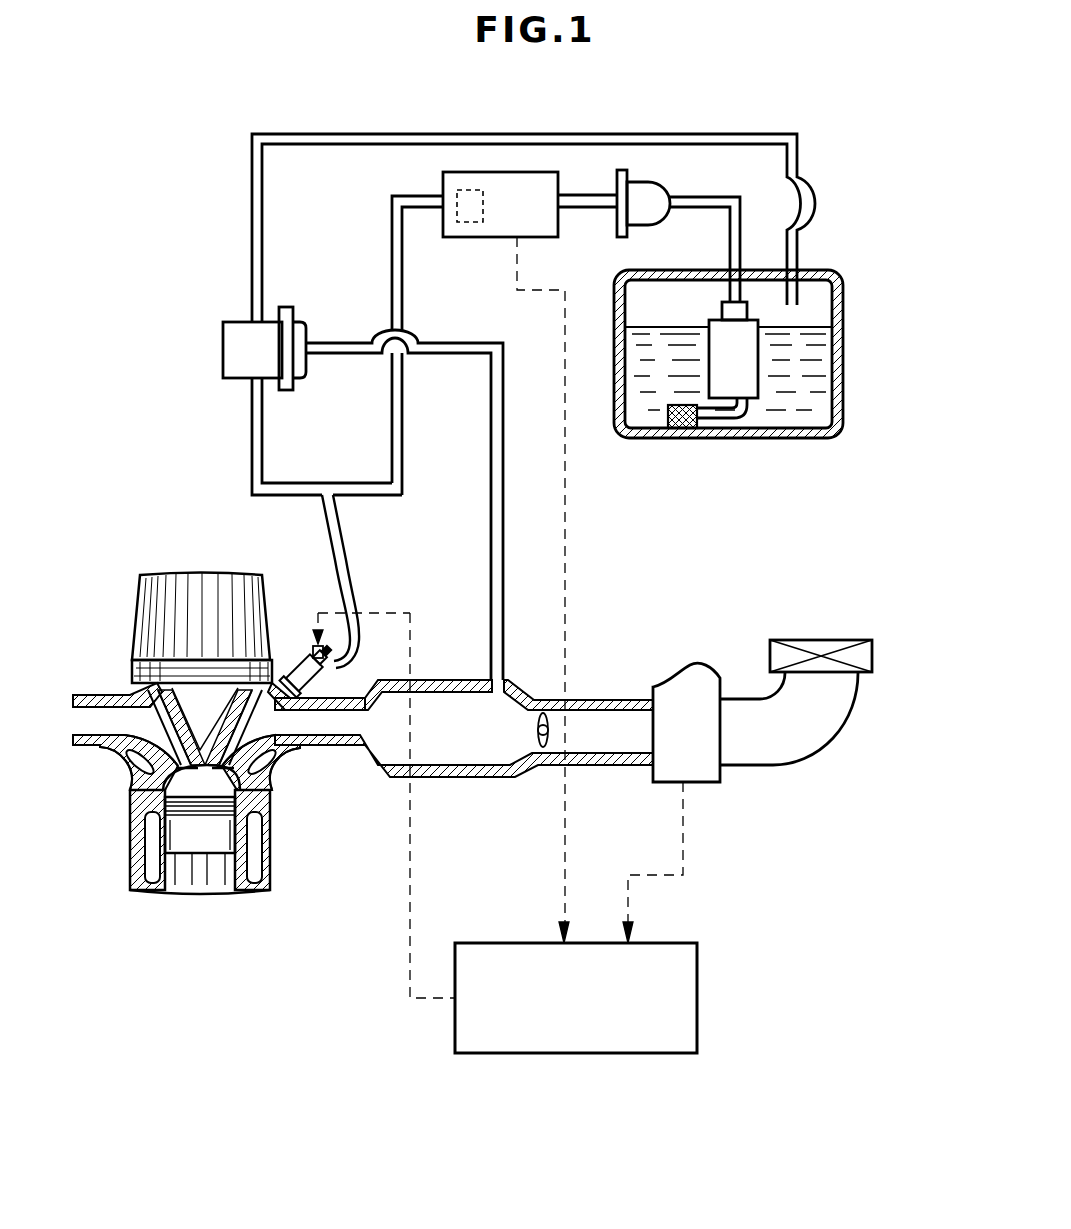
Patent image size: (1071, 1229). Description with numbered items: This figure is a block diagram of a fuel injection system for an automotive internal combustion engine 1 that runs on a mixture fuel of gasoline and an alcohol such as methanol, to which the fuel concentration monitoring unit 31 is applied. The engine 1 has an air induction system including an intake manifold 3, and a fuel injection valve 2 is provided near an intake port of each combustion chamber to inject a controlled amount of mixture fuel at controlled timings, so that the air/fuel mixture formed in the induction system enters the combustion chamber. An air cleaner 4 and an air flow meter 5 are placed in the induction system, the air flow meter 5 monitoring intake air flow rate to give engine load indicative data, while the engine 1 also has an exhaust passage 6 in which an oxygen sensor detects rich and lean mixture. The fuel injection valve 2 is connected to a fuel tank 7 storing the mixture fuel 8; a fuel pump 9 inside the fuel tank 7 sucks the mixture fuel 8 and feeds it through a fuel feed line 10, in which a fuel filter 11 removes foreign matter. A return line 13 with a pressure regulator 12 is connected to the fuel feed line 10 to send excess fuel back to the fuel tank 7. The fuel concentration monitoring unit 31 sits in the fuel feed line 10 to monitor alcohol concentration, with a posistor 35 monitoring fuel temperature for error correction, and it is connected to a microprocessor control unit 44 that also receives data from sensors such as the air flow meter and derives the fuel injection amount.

The internal combustion engine 1 is at (140, 797).
The fuel injection valve 2 is at (334, 672).
The intake manifold 3 is at (388, 778).
The air cleaner 4 is at (825, 640).
The air flow meter 5 is at (678, 692).
The exhaust passage 6 is at (95, 692).
The fuel tank 7 is at (668, 438).
The mixture fuel 8 is at (820, 400).
The fuel pump 9 is at (748, 388).
The fuel feed line 10 is at (392, 232).
The fuel filter 11 is at (650, 195).
The pressure regulator 12 is at (232, 333).
The return line 13 is at (252, 242).
The fuel concentration monitoring unit 31 is at (553, 237).
The posistor 35 is at (470, 222).
The control unit 44 is at (697, 967).